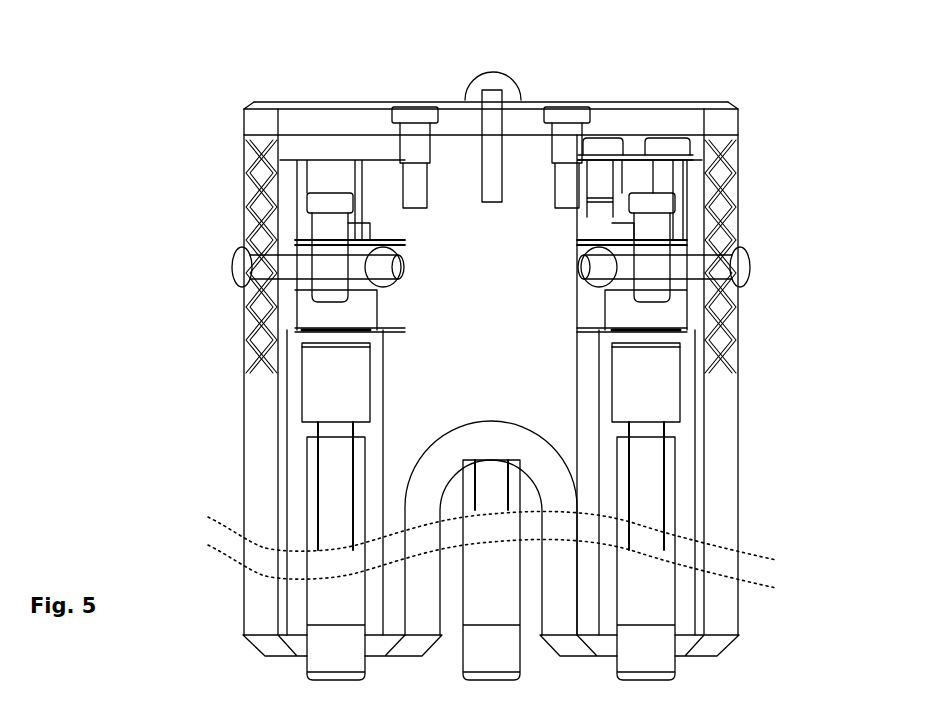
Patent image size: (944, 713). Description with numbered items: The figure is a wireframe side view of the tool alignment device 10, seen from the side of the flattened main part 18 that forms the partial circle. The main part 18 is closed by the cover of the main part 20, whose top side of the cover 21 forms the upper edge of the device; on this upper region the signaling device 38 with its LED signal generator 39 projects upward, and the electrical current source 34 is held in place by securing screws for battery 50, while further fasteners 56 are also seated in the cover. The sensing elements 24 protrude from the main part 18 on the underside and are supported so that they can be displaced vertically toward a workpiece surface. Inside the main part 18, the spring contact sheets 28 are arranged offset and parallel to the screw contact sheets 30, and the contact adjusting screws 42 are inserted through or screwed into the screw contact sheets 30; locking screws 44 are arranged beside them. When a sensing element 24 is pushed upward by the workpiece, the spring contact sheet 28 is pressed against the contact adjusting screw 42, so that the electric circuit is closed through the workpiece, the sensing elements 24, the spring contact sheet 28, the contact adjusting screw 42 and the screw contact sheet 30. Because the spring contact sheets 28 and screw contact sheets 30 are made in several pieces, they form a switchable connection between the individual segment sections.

The tool alignment device 10 is at (826, 148).
The main part 18 is at (257, 420).
The cover of the main part 20 is at (256, 124).
The top side of the cover 21 is at (320, 99).
The sensing elements 24 is at (333, 476).
The spring contact sheet 28 is at (296, 330).
The screw contact sheet 30 is at (300, 243).
The electrical current source 34 is at (638, 177).
The signaling device 38 is at (492, 77).
The LED signal generator 39 is at (493, 86).
The contact adjusting screw 42 is at (320, 203).
The locking screw 44 is at (240, 272).
The securing screw for battery 50 is at (607, 146).
The fastening screws 56 is at (420, 113).